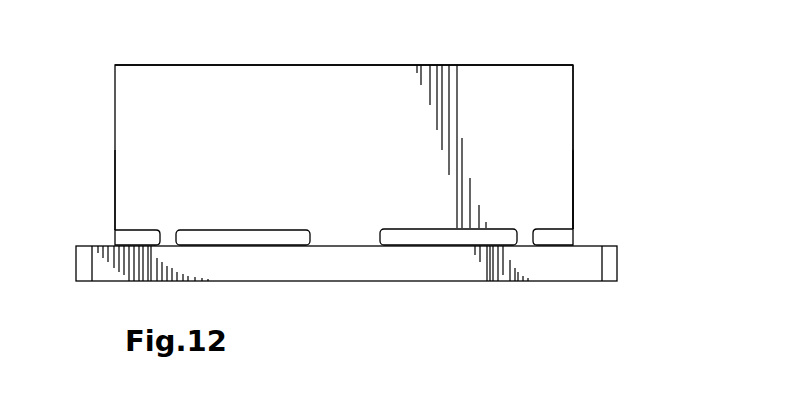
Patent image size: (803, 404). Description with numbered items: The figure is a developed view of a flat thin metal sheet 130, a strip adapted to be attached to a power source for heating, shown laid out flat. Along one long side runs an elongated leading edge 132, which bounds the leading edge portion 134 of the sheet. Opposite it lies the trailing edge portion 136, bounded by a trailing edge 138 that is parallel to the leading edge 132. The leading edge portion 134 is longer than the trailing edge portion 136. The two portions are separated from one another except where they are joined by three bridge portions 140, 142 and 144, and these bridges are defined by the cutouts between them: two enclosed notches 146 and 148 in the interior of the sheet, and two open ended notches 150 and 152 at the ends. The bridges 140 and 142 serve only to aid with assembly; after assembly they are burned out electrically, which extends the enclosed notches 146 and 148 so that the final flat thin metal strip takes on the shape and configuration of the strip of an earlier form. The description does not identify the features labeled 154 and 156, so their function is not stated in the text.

The flat thin metal sheet 130 is at (580, 111).
The leading edge 132 is at (365, 276).
The leading edge portion 134 is at (286, 267).
The trailing edge portion 136 is at (548, 157).
The trailing edge 138 is at (343, 65).
The bridge portion 140 is at (530, 227).
The bridge portion 142 is at (118, 237).
The bridge portion 144 is at (340, 237).
The enclosed notch 146 is at (420, 237).
The enclosed notch 148 is at (258, 237).
The open ended notch 150 is at (603, 230).
The open ended notch 152 is at (122, 239).
The substrate end portion 154 is at (105, 273).
The substrate end portion 156 is at (575, 264).